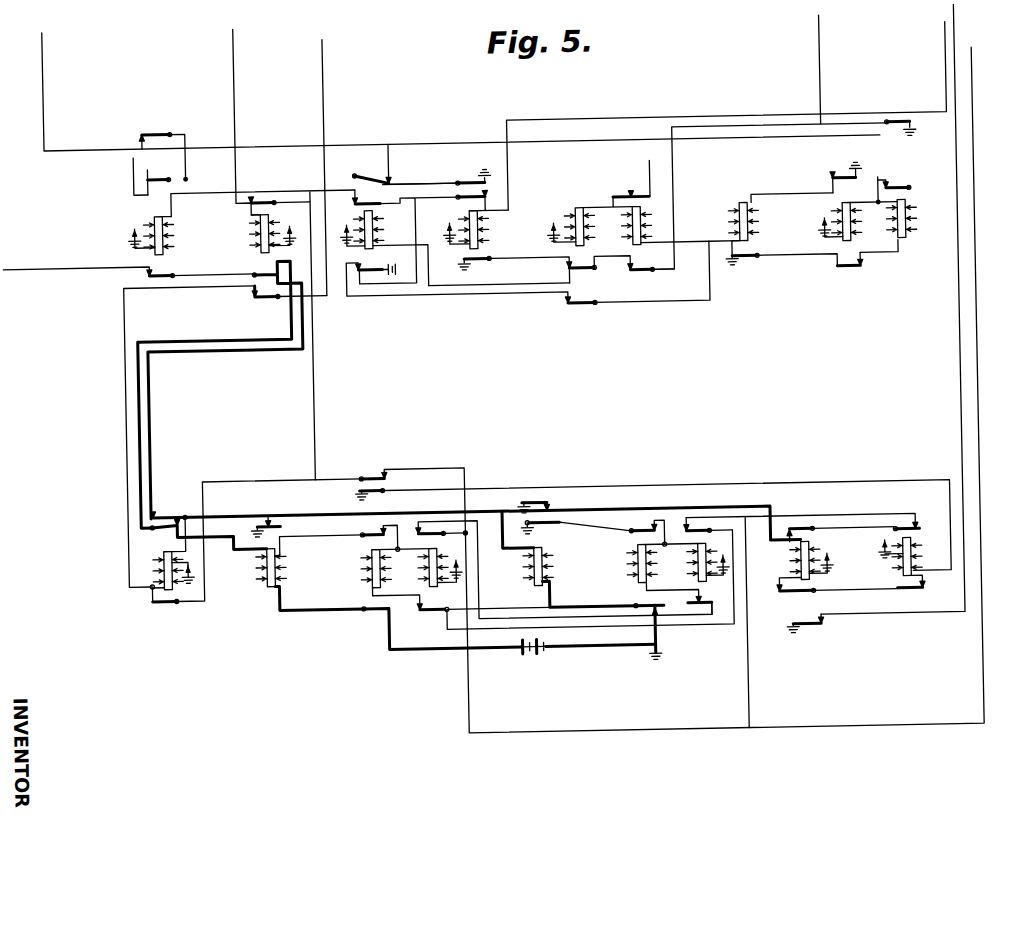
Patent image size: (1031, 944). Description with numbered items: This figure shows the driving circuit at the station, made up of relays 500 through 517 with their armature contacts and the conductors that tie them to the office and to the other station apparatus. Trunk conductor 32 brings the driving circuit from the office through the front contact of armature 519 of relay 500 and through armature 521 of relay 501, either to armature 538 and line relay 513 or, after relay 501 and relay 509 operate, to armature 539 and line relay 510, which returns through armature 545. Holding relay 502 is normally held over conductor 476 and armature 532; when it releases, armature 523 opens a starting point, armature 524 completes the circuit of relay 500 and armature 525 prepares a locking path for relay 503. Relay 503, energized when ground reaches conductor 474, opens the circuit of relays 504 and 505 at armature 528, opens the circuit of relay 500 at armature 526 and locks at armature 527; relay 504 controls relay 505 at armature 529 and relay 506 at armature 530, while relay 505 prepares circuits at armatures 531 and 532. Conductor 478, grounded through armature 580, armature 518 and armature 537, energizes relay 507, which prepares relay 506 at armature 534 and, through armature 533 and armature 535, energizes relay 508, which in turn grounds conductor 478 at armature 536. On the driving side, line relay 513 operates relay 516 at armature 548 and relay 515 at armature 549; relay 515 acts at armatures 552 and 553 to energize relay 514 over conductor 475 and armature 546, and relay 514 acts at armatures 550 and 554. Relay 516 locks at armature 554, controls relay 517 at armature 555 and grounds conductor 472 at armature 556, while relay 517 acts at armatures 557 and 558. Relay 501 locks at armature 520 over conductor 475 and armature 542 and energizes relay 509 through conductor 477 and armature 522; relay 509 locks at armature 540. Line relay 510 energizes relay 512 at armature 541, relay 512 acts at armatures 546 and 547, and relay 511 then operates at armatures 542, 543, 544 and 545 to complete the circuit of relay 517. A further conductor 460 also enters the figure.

The trunk conductor 32 is at (10, 269).
The conductor 460 is at (235, 52).
The conductor 472 is at (956, 68).
The conductor 474 is at (947, 57).
The conductor 475 is at (973, 92).
The conductor 476 is at (821, 75).
The conductor 477 is at (324, 62).
The conductor 478 is at (44, 60).
The relay 500 is at (144, 226).
The relay 501 is at (250, 236).
The holding relay 502 is at (374, 236).
The relay 503 is at (486, 237).
The relay 504 is at (574, 222).
The relay 505 is at (652, 232).
The relay 506 is at (756, 231).
The relay 507 is at (843, 218).
The relay 508 is at (913, 228).
The relay 509 is at (160, 558).
The line relay 510 is at (259, 577).
The relay 511 is at (354, 575).
The relay 512 is at (421, 575).
The line relay 513 is at (524, 576).
The relay 514 is at (620, 576).
The relay 515 is at (686, 576).
The relay 516 is at (788, 575).
The relay 517 is at (888, 573).
The armature 518 is at (142, 192).
The armature 519 is at (142, 281).
The armature 520 is at (246, 206).
The armature 521 is at (260, 274).
The armature 522 is at (260, 307).
The armature 523 is at (384, 188).
The armature 524 is at (368, 221).
The armature 525 is at (360, 272).
The armature 526 is at (490, 191).
The armature 527 is at (488, 210).
The armature 528 is at (482, 268).
The armature 529 is at (564, 282).
The armature 530 is at (578, 312).
The armature 531 is at (630, 206).
The armature 532 is at (636, 280).
The armature 533 is at (750, 266).
The armature 534 is at (838, 192).
The armature 535 is at (847, 274).
The armature 536 is at (900, 133).
The armature 537 is at (902, 204).
The armature 538 is at (164, 520).
The armature 539 is at (142, 533).
The armature 540 is at (148, 612).
The armature 541 is at (260, 520).
The armature 542 is at (364, 482).
The armature 543 is at (376, 497).
The armature 544 is at (356, 541).
The armature 545 is at (360, 615).
The armature 546 is at (426, 531).
The armature 547 is at (420, 617).
The armature 548 is at (534, 510).
The armature 549 is at (552, 532).
The armature 550 is at (647, 538).
The armature 552 is at (690, 538).
The armature 553 is at (696, 616).
The armature 554 is at (630, 618).
The armature 555 is at (780, 606).
The armature 556 is at (798, 638).
The armature 557 is at (908, 541).
The armature 558 is at (898, 604).
The armature 580 is at (152, 136).